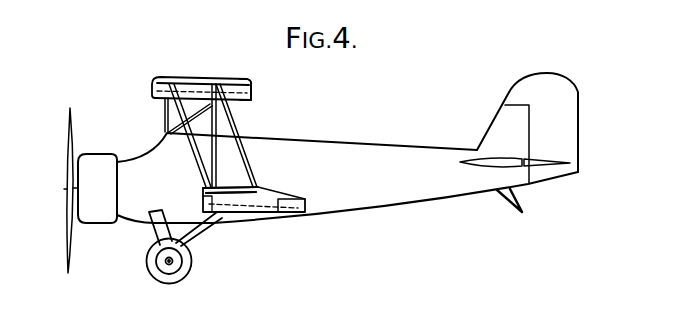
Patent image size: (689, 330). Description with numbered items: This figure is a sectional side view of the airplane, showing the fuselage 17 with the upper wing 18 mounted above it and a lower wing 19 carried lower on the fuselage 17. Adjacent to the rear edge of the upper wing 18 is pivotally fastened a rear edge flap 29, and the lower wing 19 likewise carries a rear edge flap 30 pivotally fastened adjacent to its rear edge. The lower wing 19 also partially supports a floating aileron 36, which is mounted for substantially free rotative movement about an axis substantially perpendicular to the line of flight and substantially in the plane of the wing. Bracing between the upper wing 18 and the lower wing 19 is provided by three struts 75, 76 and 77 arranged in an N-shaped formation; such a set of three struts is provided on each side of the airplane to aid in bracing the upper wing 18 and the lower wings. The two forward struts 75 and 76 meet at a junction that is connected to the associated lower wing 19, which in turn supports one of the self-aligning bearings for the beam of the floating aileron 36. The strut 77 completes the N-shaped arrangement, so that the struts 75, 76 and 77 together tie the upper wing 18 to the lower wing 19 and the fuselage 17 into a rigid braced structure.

The fuselage 17 is at (433, 190).
The upper wing 18 is at (189, 77).
The lower wing 19 is at (259, 210).
The rear edge flap 29 is at (253, 92).
The rear edge flap 30 is at (305, 210).
The floating aileron 36 is at (240, 193).
The strut 75 is at (179, 116).
The strut 76 is at (212, 124).
The strut 77 is at (212, 130).